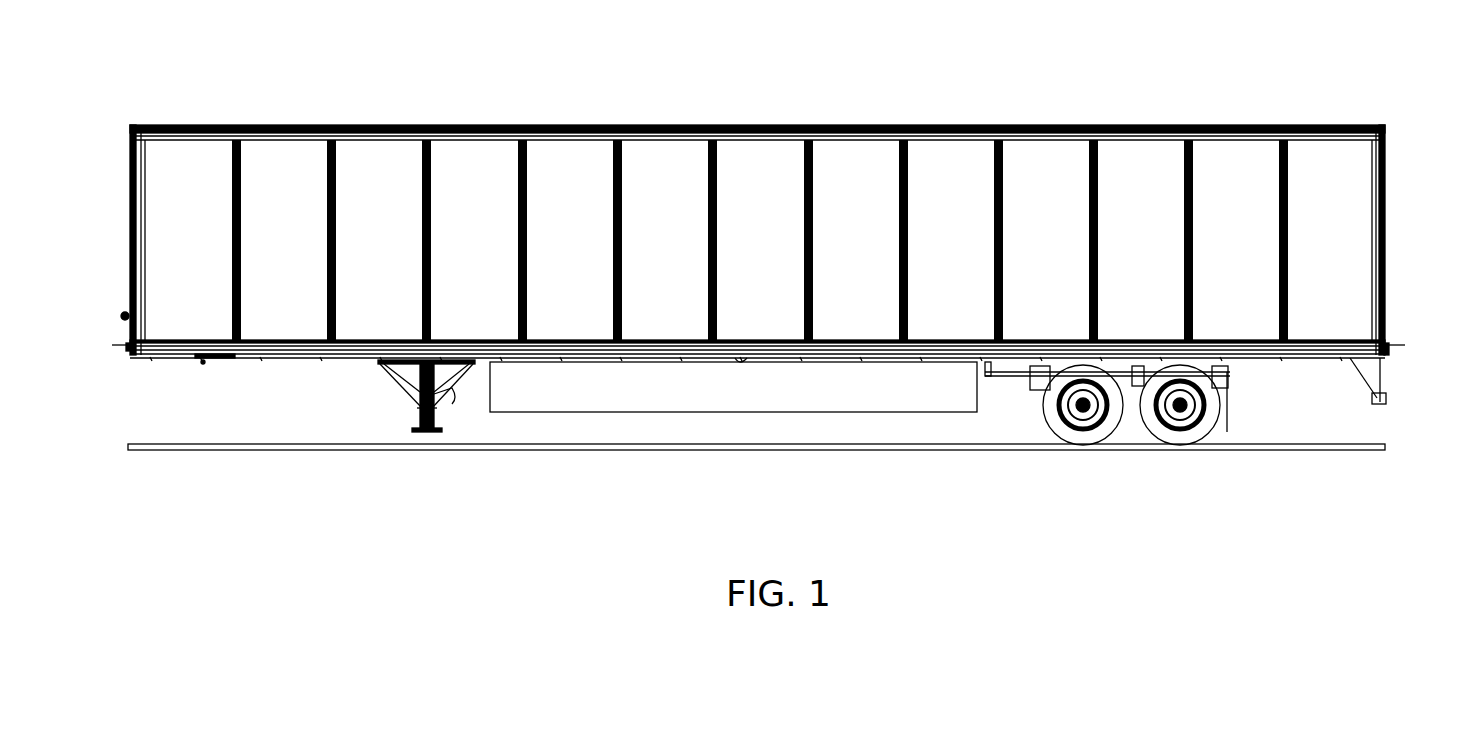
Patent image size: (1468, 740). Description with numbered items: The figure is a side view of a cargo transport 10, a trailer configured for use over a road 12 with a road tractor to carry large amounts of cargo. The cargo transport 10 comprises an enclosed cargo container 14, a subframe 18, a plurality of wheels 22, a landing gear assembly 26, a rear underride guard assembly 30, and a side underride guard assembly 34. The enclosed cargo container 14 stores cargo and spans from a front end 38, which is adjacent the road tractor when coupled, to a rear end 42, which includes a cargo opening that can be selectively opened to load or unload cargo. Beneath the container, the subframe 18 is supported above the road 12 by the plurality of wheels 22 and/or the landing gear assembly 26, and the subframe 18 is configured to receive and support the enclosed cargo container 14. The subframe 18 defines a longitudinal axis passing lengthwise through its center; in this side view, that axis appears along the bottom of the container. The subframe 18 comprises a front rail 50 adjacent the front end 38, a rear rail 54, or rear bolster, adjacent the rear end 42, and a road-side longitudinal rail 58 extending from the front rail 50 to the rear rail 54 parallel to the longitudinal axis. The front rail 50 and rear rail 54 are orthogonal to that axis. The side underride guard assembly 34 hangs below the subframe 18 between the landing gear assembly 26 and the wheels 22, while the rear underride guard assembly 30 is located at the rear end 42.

The cargo transport 10 is at (774, 66).
The road 12 is at (984, 457).
The enclosed cargo container 14 is at (907, 108).
The subframe 18 is at (220, 362).
The plurality of wheels 22 is at (1247, 403).
The landing gear assembly 26 is at (386, 395).
The rear underride guard assembly 30 is at (1390, 411).
The side underride guard assembly 34 is at (569, 425).
The front end 38 is at (134, 116).
The rear end 42 is at (1394, 108).
The front rail 50 is at (130, 354).
The rear rail 54 is at (1392, 358).
The road-side longitudinal rail 58 is at (234, 358).